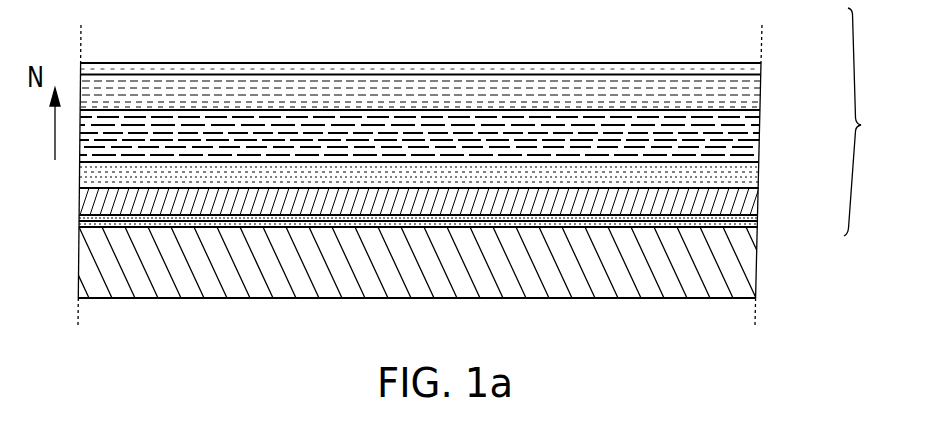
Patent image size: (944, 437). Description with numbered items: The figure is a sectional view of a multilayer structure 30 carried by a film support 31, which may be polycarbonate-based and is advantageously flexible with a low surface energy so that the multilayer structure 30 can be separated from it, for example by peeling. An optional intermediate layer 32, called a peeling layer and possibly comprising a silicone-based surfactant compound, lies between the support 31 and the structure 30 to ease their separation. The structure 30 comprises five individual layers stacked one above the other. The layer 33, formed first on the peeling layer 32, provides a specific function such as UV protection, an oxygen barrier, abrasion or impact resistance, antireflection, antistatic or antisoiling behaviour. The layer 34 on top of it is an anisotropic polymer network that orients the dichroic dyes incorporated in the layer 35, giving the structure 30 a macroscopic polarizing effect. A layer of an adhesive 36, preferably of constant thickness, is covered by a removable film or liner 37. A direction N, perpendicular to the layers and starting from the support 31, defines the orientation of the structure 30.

The multilayer structure 30 is at (871, 122).
The film support 31 is at (596, 291).
The intermediate layer 32 is at (698, 223).
The layer 33 is at (750, 205).
The layer 34 is at (750, 183).
The layer 35 is at (747, 143).
The layer of an adhesive 36 is at (740, 97).
The film or liner 37 is at (752, 65).